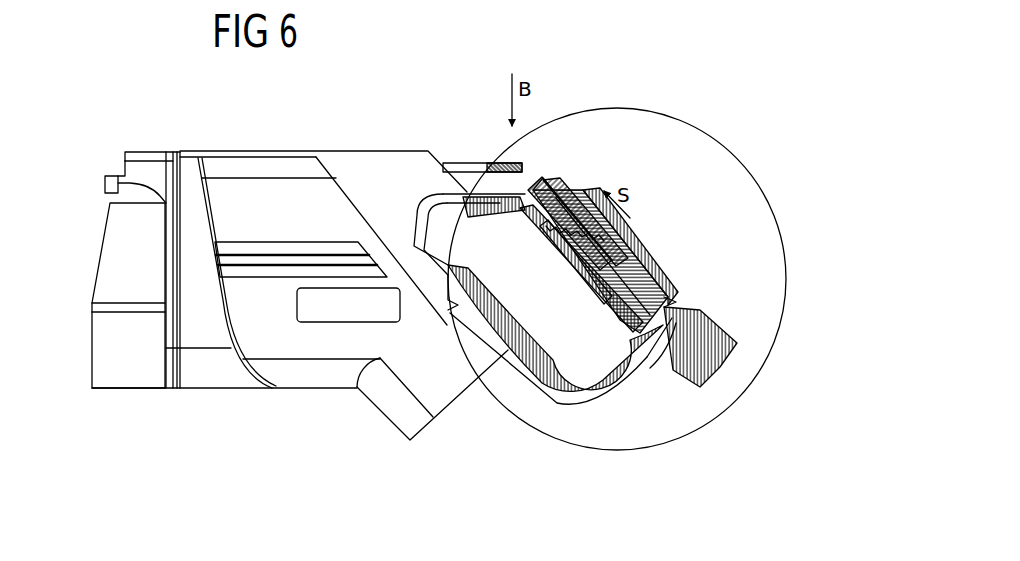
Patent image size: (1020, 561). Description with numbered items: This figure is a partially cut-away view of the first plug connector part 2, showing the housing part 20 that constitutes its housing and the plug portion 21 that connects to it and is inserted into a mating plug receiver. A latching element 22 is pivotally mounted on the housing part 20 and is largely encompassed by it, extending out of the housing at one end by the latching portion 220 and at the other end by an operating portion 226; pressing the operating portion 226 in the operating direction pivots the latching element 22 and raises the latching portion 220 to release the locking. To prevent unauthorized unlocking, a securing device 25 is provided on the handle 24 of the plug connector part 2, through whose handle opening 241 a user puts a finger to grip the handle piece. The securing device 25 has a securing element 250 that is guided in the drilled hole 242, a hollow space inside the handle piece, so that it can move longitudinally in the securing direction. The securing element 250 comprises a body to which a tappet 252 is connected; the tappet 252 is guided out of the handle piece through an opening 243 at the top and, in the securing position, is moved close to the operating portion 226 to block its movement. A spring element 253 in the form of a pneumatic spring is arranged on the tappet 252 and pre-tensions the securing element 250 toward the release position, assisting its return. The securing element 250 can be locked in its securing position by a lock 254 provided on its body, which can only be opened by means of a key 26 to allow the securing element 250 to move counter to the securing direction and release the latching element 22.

The first plug connector part 2 is at (392, 140).
The housing part 20 is at (308, 376).
The plug portion 21 is at (131, 370).
The latching element 22 is at (119, 176).
The latching portion 220 is at (108, 180).
The operating portion 226 is at (453, 160).
The handle 24 is at (540, 400).
The handle opening 241 is at (593, 358).
The drilled hole 242 is at (658, 257).
The opening 243 is at (570, 192).
The securing device 25 is at (659, 370).
The securing element 250 is at (635, 241).
The tappet 252 is at (548, 182).
The spring element 253 is at (560, 265).
The lock 254 is at (678, 302).
The key 26 is at (697, 378).